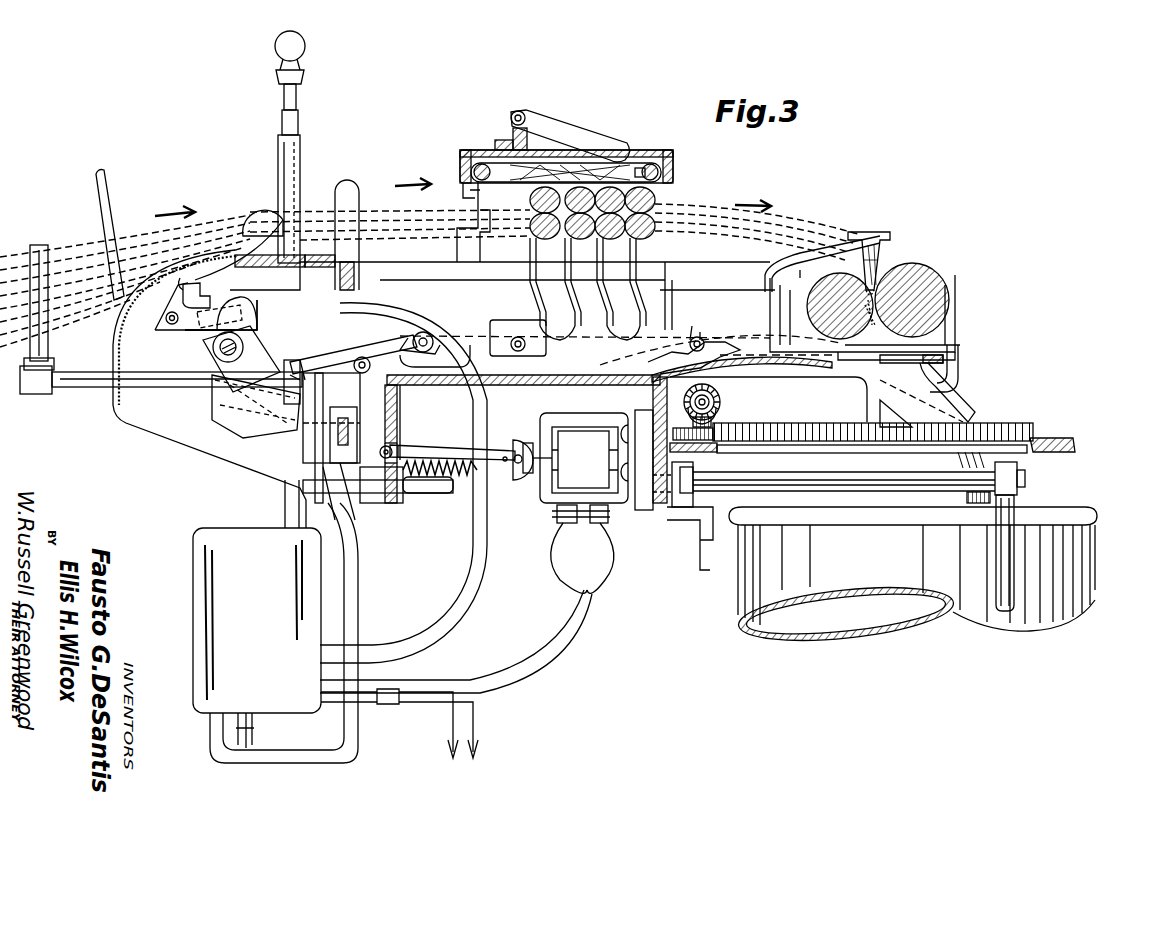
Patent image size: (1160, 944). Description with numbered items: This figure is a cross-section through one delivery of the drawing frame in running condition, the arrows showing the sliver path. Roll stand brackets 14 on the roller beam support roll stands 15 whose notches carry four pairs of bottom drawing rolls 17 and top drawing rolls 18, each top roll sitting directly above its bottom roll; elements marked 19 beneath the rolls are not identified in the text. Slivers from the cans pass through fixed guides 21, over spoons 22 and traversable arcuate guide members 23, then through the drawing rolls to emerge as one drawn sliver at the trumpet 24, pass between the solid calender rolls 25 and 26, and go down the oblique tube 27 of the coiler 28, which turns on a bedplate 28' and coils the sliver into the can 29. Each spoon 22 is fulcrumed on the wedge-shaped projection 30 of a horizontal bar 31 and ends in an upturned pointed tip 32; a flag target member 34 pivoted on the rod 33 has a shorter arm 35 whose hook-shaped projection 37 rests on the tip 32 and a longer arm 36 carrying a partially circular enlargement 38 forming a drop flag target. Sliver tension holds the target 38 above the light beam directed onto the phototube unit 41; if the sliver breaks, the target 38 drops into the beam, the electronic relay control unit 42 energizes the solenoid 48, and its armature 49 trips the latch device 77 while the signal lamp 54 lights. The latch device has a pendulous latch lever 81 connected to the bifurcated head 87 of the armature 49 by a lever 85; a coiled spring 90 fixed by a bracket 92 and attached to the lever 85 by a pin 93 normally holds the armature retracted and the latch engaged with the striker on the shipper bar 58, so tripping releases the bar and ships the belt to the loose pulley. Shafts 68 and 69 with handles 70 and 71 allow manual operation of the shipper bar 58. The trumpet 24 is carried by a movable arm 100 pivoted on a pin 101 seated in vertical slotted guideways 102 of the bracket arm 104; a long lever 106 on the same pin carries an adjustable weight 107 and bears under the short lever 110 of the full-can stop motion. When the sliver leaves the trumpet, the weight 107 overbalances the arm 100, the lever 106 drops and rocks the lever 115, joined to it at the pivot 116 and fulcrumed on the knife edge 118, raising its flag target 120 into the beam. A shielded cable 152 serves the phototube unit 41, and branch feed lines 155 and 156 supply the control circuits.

The roll stand brackets 14 is at (422, 262).
The roll stands 15 is at (620, 248).
The bottom drawing rolls 17 is at (530, 230).
The top drawing rolls 18 is at (660, 200).
The finger tips 19 is at (592, 327).
The fixed guides 21 is at (104, 172).
The spoon 22 is at (262, 214).
The traversable arcuate guide members 23 is at (346, 188).
The trumpet 24 is at (882, 250).
The calender roll 25 is at (840, 290).
The calender roll 26 is at (920, 268).
The oblique tube 27 is at (965, 398).
The coiler 28 is at (851, 431).
The bedplate 28' is at (1053, 423).
The can 29 is at (1092, 572).
The wedge-shaped projection 30 is at (240, 268).
The horizontally disposed bar 31 is at (266, 268).
The upturned pointed tip 32 is at (196, 283).
The horizontally disposed rod 33 is at (163, 320).
The flag target member 34 is at (258, 305).
The shorter arm 35 is at (172, 303).
The longer arm 36 is at (190, 325).
The hook-shaped projection 37 is at (181, 284).
The drop flag target 38 is at (247, 312).
The phototube unit 41 is at (256, 352).
The electronic relay control unit 42 is at (238, 530).
The solenoid 48 is at (580, 416).
The armature 49 is at (530, 441).
The signal lamp 54 is at (305, 44).
The shipper bar 58 is at (348, 503).
The shaft 68 is at (82, 388).
The shaft 69 is at (1027, 480).
The operating handle 70 is at (38, 246).
The operating handle 71 is at (1004, 612).
The latch device 77 is at (423, 442).
The pendulous latch lever 81 is at (397, 410).
The lever 85 is at (454, 448).
The bifurcated head 87 is at (512, 443).
The coiled spring 90 is at (460, 480).
The bracket 92 is at (388, 503).
The pin 93 is at (506, 465).
The trumpet arm 100 is at (792, 262).
The pivot pin 101 is at (692, 326).
The vertical slotted guideways 102 is at (700, 340).
The arm of bifurcated bracket 104 is at (670, 352).
The long lever 106 is at (468, 326).
The adjustable weight 107 is at (514, 322).
The short lever 110 is at (775, 352).
The lever 115 is at (332, 358).
The pivot 116 is at (422, 331).
The knife edge 118 is at (362, 356).
The flag target 120 is at (216, 400).
The shielded cable 152 is at (345, 756).
The branch feed line 155 is at (450, 727).
The branch feed line 156 is at (476, 727).